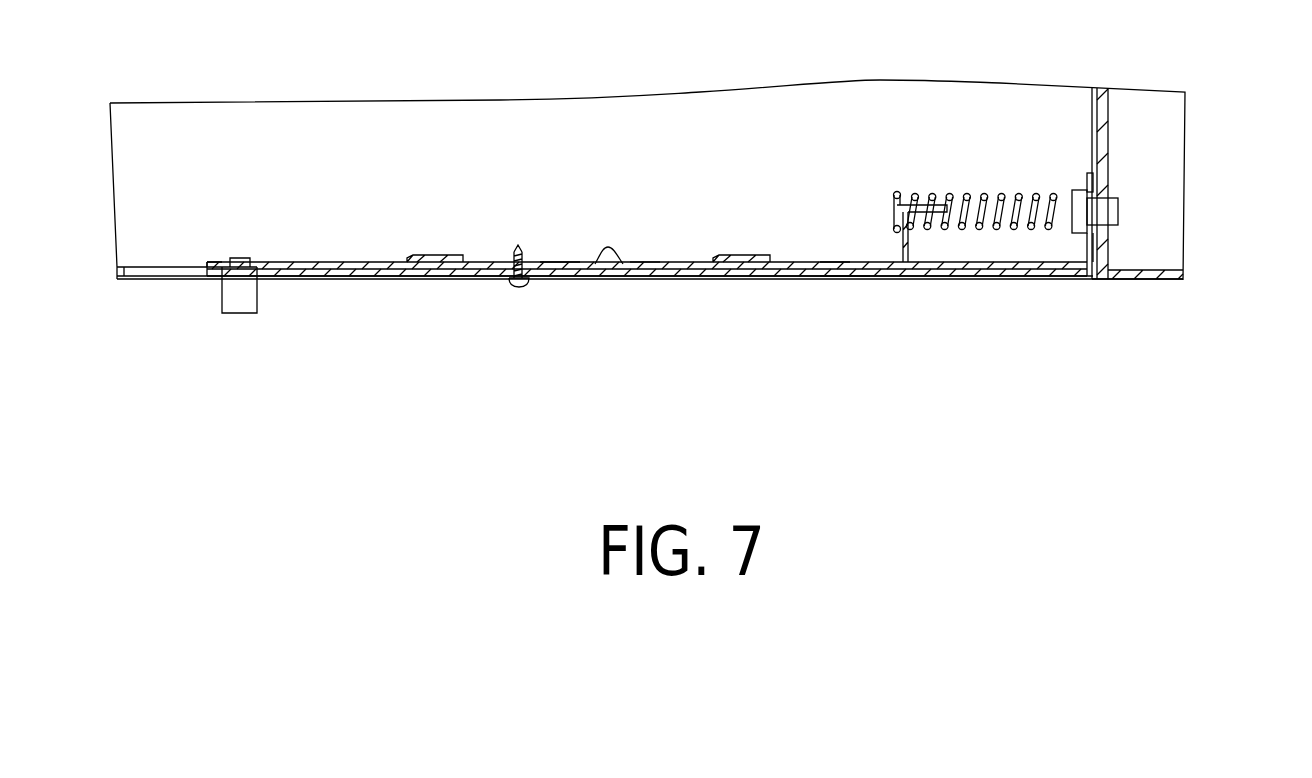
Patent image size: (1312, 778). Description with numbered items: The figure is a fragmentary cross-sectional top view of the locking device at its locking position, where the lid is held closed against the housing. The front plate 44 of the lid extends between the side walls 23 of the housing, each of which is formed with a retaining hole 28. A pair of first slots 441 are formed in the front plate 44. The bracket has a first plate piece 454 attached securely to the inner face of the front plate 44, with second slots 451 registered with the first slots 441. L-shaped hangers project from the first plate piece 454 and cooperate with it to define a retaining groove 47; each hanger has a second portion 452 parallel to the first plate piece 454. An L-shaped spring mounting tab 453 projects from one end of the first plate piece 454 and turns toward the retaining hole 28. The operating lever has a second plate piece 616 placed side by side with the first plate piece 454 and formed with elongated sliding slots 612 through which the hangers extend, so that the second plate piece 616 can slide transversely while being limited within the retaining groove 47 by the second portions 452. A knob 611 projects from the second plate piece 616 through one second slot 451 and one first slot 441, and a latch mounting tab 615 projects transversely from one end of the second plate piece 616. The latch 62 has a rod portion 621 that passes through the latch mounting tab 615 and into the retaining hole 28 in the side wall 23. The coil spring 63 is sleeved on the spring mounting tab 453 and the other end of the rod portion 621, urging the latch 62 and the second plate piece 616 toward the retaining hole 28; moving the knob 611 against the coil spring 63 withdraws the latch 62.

The side wall 23 is at (1167, 280).
The retaining hole 28 is at (1108, 240).
The front plate 44 is at (873, 278).
The retaining groove 47 is at (608, 253).
The latch 62 is at (1080, 208).
The coil spring 63 is at (985, 232).
The first slot 441 is at (205, 278).
The second slot 451 is at (142, 272).
The second portion 452 is at (432, 260).
The spring mounting tab 453 is at (922, 200).
The first plate piece 454 is at (843, 272).
The knob 611 is at (245, 303).
The sliding slot 612 is at (557, 260).
The latch mounting tab 615 is at (1092, 177).
The second plate piece 616 is at (645, 262).
The rod portion 621 is at (1112, 213).